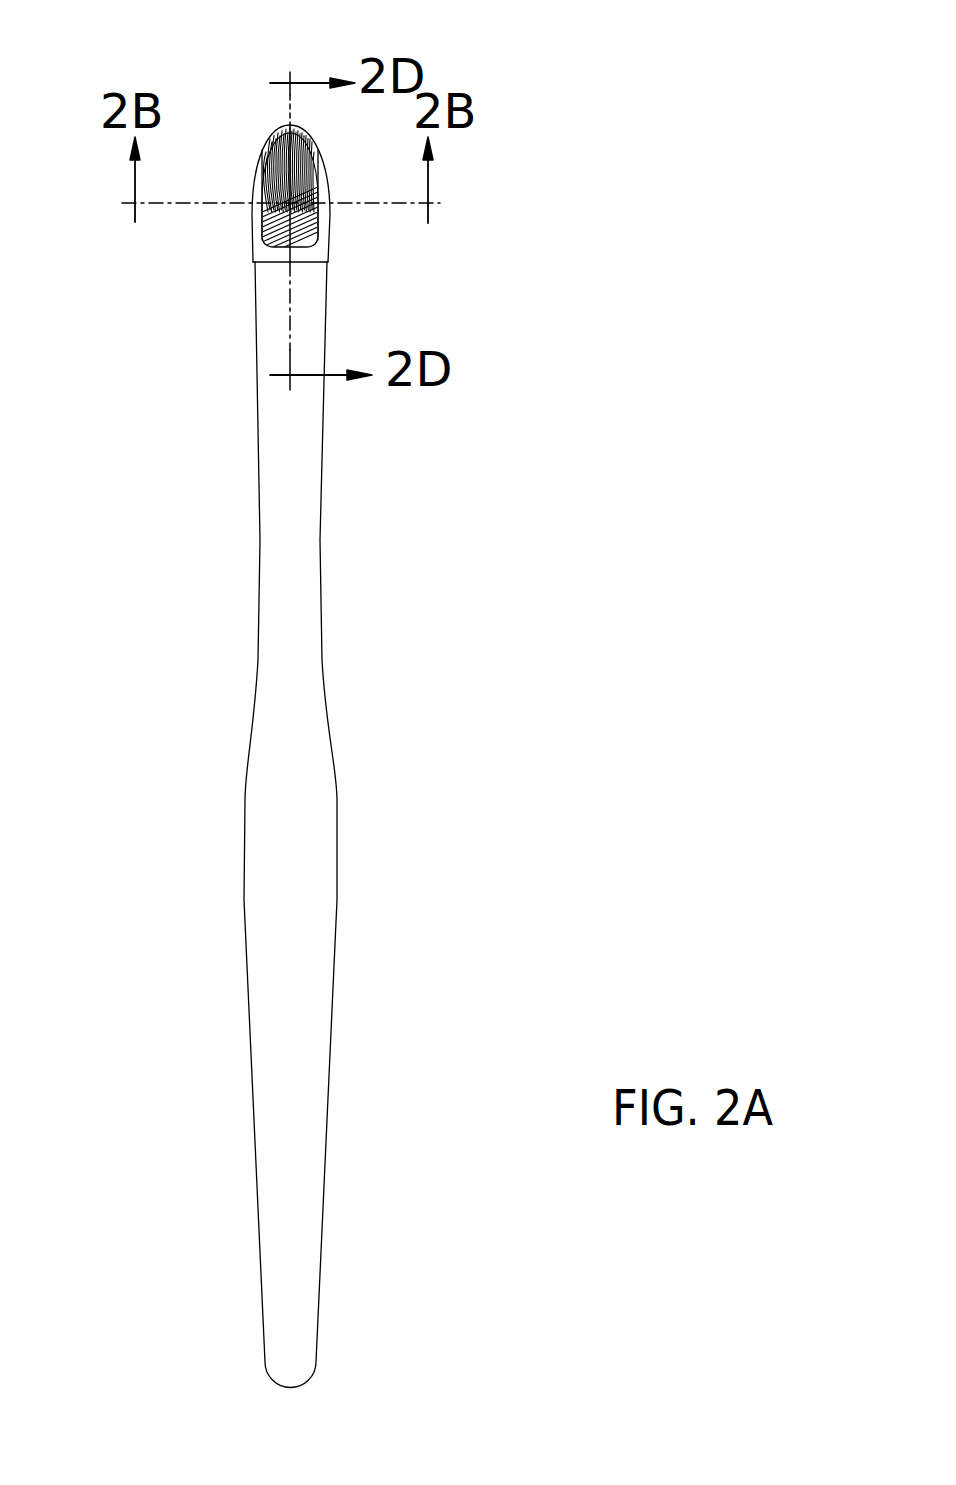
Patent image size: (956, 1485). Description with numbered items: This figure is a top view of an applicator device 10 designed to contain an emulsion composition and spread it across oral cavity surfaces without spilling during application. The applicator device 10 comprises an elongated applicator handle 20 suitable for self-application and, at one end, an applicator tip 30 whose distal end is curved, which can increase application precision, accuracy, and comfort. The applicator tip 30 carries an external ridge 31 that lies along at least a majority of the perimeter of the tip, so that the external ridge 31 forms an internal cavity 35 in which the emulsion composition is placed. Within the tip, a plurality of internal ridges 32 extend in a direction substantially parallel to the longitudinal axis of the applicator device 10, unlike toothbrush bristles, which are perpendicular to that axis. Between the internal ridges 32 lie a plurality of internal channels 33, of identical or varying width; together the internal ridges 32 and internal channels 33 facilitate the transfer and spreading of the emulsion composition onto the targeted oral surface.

The applicator device 10 is at (533, 143).
The applicator handle 20 is at (216, 260).
The applicator tip 30 is at (284, 177).
The external ridge 31 is at (303, 240).
The internal ridges 32 is at (287, 123).
The internal channels 33 is at (272, 135).
The internal cavity 35 is at (313, 208).